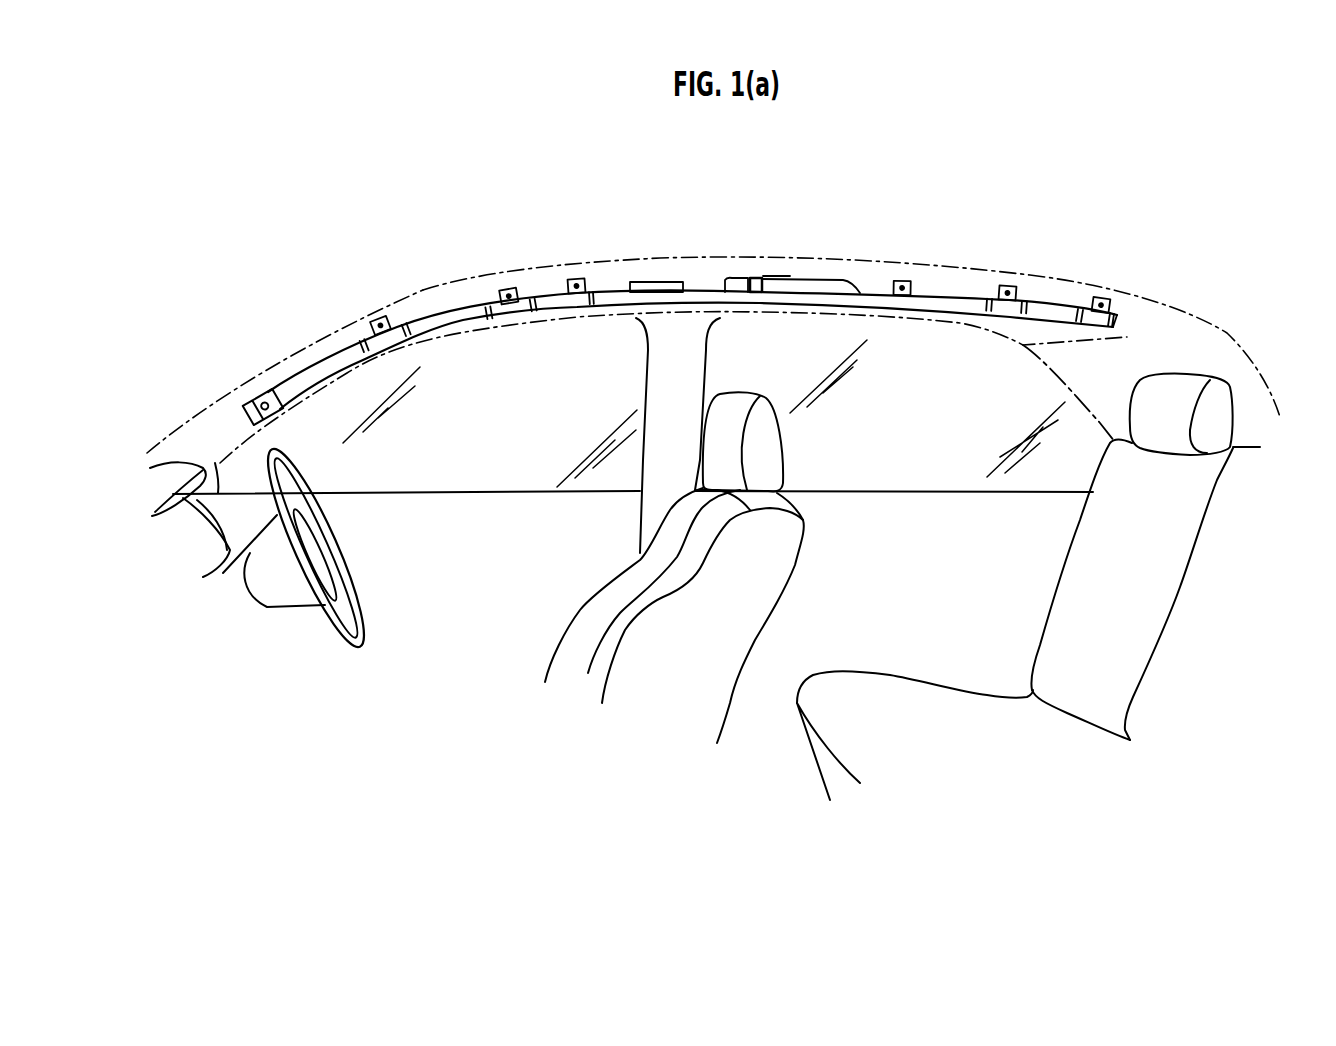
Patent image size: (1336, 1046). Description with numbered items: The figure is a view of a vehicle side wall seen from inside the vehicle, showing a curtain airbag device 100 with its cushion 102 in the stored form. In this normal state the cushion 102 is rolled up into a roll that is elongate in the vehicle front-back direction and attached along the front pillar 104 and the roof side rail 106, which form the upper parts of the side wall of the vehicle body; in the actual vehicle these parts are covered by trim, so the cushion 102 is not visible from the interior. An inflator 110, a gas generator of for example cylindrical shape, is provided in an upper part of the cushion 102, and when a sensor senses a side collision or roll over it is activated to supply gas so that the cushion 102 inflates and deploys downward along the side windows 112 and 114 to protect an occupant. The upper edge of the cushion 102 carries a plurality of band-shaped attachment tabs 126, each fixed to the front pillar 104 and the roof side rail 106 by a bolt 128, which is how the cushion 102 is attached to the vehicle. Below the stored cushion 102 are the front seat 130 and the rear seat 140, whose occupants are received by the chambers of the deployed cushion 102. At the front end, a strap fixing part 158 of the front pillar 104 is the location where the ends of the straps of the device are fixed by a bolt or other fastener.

The curtain airbag device 100 is at (681, 299).
The cushion 102 is at (697, 297).
The front pillar 104 is at (200, 420).
The roof side rail 106 is at (547, 270).
The inflator 110 is at (800, 278).
The side window 112 is at (490, 470).
The side window 114 is at (890, 465).
The attachment tab 126 is at (1087, 307).
The bolt 128 is at (1100, 306).
The front seat 130 is at (662, 703).
The rear seat 140 is at (1077, 683).
The strap fixing part 158 is at (247, 403).